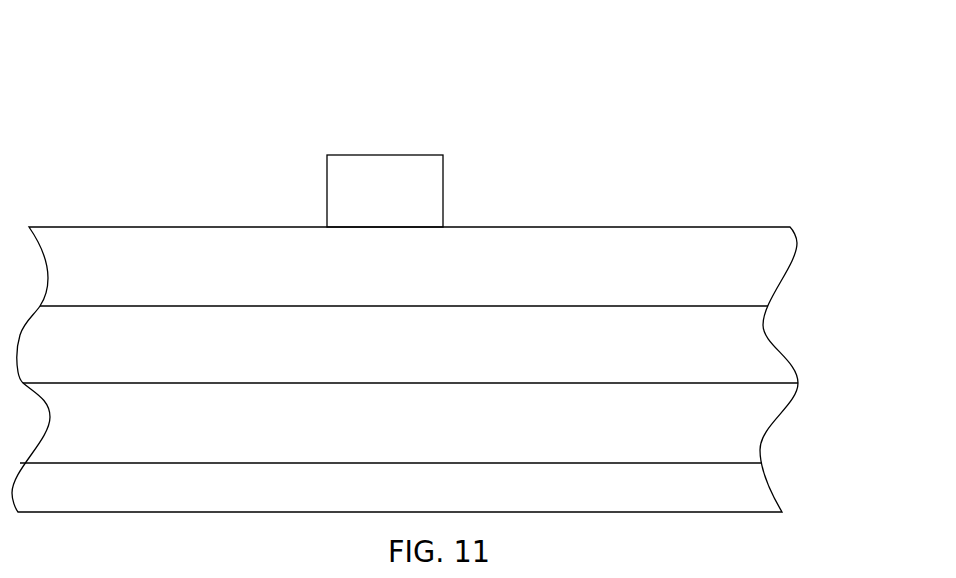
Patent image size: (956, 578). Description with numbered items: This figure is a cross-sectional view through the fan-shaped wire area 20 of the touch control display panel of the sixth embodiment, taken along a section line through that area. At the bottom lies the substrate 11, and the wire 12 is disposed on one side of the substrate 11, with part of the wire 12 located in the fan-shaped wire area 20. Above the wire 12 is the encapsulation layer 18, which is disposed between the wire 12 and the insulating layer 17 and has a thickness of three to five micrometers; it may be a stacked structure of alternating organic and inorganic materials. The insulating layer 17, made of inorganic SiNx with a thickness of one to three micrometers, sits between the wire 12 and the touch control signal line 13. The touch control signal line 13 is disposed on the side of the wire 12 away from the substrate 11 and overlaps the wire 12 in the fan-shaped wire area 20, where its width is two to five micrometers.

The fan-shaped wire area 20 is at (362, 114).
The touch control signal line 13 is at (433, 190).
The insulating layer 17 is at (762, 246).
The encapsulation layer 18 is at (757, 336).
The wire 12 is at (760, 412).
The substrate 11 is at (762, 478).